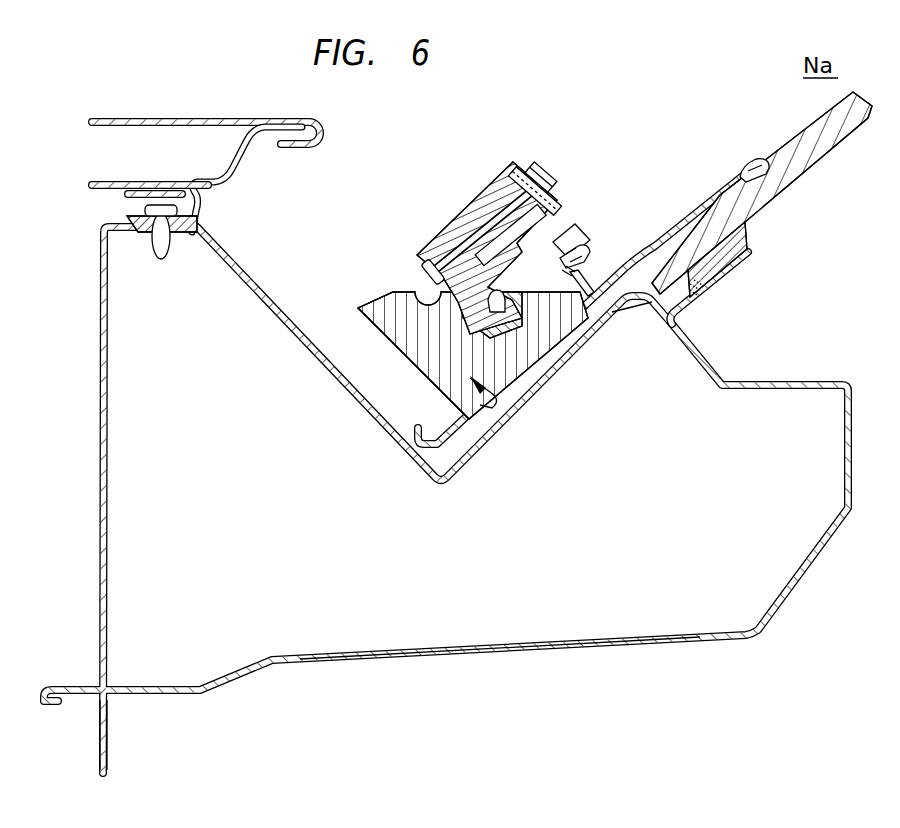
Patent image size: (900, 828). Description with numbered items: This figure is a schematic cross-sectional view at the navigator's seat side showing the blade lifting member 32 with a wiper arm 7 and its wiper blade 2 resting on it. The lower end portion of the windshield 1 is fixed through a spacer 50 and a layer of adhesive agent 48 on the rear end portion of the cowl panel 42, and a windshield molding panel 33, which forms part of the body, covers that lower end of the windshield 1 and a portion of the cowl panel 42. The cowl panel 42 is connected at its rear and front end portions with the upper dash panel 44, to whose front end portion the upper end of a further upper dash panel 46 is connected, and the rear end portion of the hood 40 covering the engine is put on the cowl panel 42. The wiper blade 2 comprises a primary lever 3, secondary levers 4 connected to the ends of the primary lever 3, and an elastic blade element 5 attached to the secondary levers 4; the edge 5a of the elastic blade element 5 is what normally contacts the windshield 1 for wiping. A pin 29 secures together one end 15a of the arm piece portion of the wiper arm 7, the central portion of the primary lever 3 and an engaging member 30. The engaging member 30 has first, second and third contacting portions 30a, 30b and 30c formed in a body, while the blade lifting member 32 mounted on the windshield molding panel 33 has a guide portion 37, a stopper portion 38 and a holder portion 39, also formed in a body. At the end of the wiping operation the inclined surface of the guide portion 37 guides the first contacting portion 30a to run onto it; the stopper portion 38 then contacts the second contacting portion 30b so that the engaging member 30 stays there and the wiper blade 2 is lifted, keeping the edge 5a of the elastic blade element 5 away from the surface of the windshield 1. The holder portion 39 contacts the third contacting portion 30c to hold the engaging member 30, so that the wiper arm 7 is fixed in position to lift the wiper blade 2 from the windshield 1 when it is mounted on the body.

The windshield 1 is at (797, 150).
The wiper blade 2 is at (513, 150).
The primary lever 3 is at (552, 203).
The secondary lever 4 is at (568, 232).
The elastic blade element 5 is at (580, 246).
The edge of the elastic blade element 5a is at (590, 279).
The wiper arm 7 is at (456, 169).
The one end of the arm piece portion 15a is at (498, 180).
The pin 29 is at (540, 168).
The engaging member 30 is at (428, 222).
The first contacting portion 30a is at (503, 322).
The second contacting portion 30b is at (480, 306).
The third contacting portion 30c is at (498, 333).
The blade lifting member 32 is at (430, 390).
The windshield molding panel 33 is at (662, 226).
The guide portion 37 is at (585, 338).
The stopper portion 38 is at (467, 327).
The holder portion 39 is at (418, 300).
The hood 40 is at (196, 117).
The cowl panel 42 is at (113, 456).
The upper dash panel 44 is at (556, 646).
The upper dash panel 46 is at (110, 733).
The layer of adhesive agent 48 is at (628, 312).
The spacer 50 is at (732, 247).